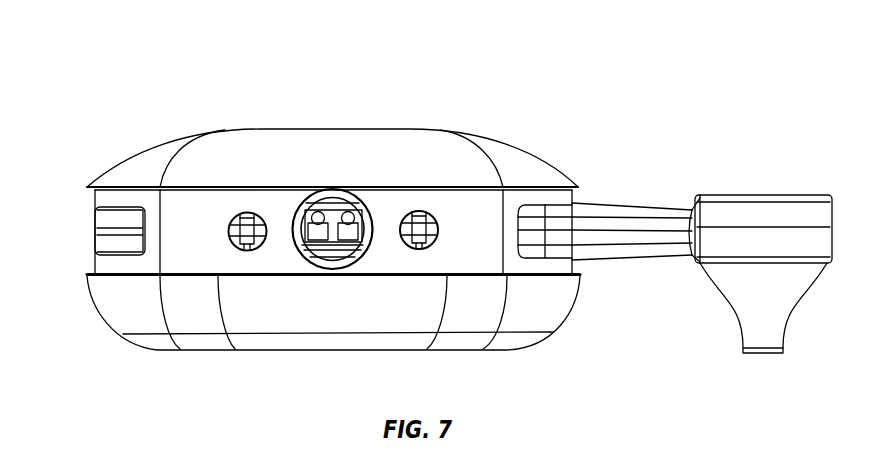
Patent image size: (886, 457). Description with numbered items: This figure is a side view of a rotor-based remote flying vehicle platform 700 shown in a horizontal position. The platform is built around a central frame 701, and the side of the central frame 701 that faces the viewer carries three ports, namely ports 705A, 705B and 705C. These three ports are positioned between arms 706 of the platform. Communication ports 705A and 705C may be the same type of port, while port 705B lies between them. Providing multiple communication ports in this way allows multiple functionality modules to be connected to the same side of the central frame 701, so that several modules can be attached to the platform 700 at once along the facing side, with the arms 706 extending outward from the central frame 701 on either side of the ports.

The rotor-based remote flying vehicle platform 700 is at (117, 117).
The central frame 701 is at (283, 127).
The communication port 705A is at (245, 212).
The port 705B is at (332, 197).
The communication port 705C is at (417, 212).
The arms 706 is at (617, 205).